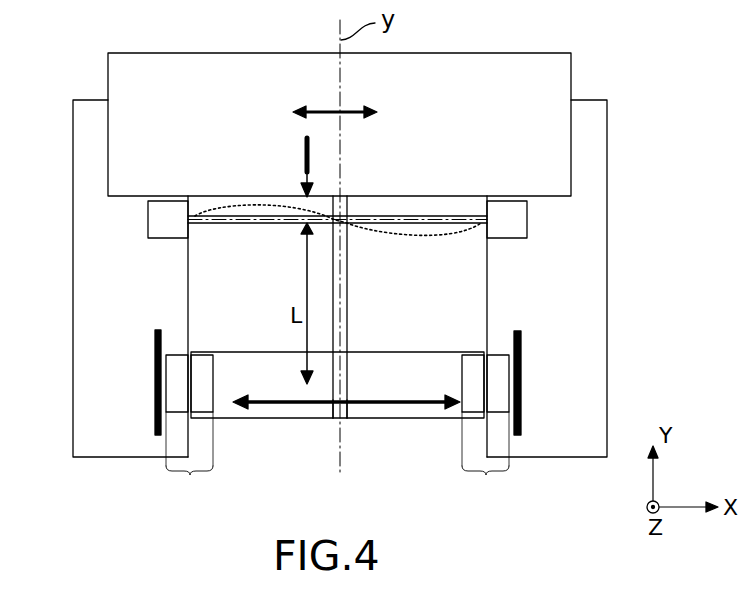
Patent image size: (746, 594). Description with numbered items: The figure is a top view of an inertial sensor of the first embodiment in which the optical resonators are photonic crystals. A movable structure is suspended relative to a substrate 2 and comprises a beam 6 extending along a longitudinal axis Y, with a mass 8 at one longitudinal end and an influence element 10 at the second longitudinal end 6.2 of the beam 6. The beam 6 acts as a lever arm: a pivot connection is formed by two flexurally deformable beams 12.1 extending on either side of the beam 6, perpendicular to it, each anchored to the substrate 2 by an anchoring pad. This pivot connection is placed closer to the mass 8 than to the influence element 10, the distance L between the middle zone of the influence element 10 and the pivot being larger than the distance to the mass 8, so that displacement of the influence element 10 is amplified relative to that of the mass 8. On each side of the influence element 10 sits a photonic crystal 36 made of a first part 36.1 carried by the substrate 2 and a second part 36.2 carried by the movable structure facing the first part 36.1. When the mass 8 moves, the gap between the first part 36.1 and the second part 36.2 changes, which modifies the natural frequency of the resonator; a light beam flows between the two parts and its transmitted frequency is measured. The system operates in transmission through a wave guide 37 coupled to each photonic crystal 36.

The substrate 2 is at (597, 166).
The mass 8 is at (565, 79).
The beam 6 is at (347, 312).
The second longitudinal end 6.2 is at (342, 420).
The influence element 10 is at (448, 356).
The beams 12.1 is at (193, 218).
The photonic crystal 36 is at (339, 426).
The first part 36.1 is at (173, 405).
The second part 36.2 is at (202, 400).
The wave guide 37 is at (155, 347).